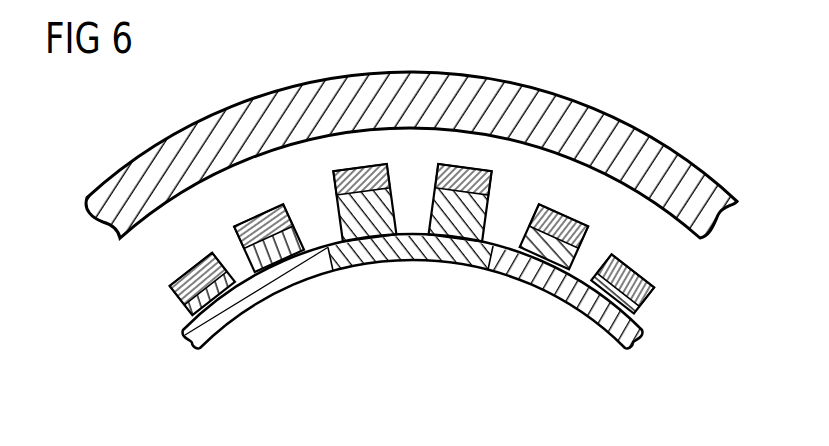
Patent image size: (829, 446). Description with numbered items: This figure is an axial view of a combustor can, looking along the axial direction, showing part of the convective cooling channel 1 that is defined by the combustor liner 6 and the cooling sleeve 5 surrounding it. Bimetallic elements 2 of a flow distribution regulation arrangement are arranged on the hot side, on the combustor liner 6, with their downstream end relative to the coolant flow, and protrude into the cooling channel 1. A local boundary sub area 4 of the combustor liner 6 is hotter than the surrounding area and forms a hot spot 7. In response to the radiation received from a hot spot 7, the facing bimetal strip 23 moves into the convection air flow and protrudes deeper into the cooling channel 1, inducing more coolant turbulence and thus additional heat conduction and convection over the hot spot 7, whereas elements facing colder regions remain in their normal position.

The cooling channel 1 is at (157, 255).
The bimetallic element 2 is at (412, 237).
The bimetal strip 23 is at (198, 278).
The local boundary sub area 4 is at (410, 283).
The cooling sleeve 5 is at (340, 95).
The combustor liner 6 is at (225, 312).
The hot spot 7 is at (413, 256).